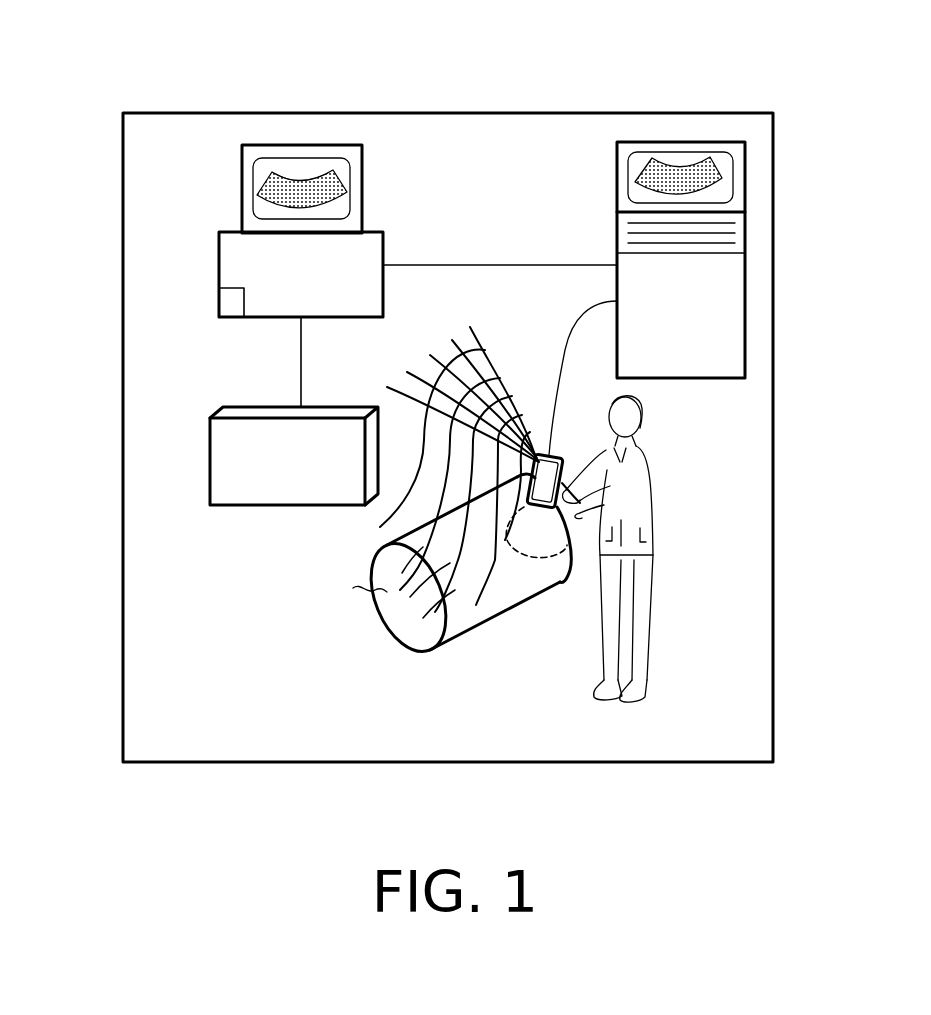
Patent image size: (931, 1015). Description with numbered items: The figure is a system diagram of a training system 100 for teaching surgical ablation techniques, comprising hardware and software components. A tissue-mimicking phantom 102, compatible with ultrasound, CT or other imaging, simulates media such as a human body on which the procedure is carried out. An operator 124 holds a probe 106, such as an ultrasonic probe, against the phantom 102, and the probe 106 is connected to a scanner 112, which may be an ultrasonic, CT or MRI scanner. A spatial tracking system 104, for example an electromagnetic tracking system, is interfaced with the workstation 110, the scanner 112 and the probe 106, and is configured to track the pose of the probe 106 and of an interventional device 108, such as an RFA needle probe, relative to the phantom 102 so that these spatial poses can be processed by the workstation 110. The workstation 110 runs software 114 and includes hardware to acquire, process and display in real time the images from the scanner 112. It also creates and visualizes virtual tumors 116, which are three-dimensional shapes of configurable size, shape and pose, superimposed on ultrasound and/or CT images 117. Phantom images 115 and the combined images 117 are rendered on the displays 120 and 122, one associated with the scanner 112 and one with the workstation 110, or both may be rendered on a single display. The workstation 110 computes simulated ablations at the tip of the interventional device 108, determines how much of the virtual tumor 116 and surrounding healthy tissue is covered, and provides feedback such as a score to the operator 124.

The training system 100 is at (538, 107).
The tissue-mimicking phantom 102 is at (413, 640).
The spatial tracking system 104 is at (228, 465).
The probe 106 is at (555, 456).
The interventional device 108 is at (406, 383).
The workstation 110 is at (231, 249).
The scanner 112 is at (718, 375).
The software 114 is at (231, 302).
The phantom images 115 is at (686, 178).
The virtual tumors 116 is at (284, 185).
The combined images 117 is at (323, 175).
The display 120 is at (617, 198).
The display 122 is at (363, 188).
The operator 124 is at (657, 524).